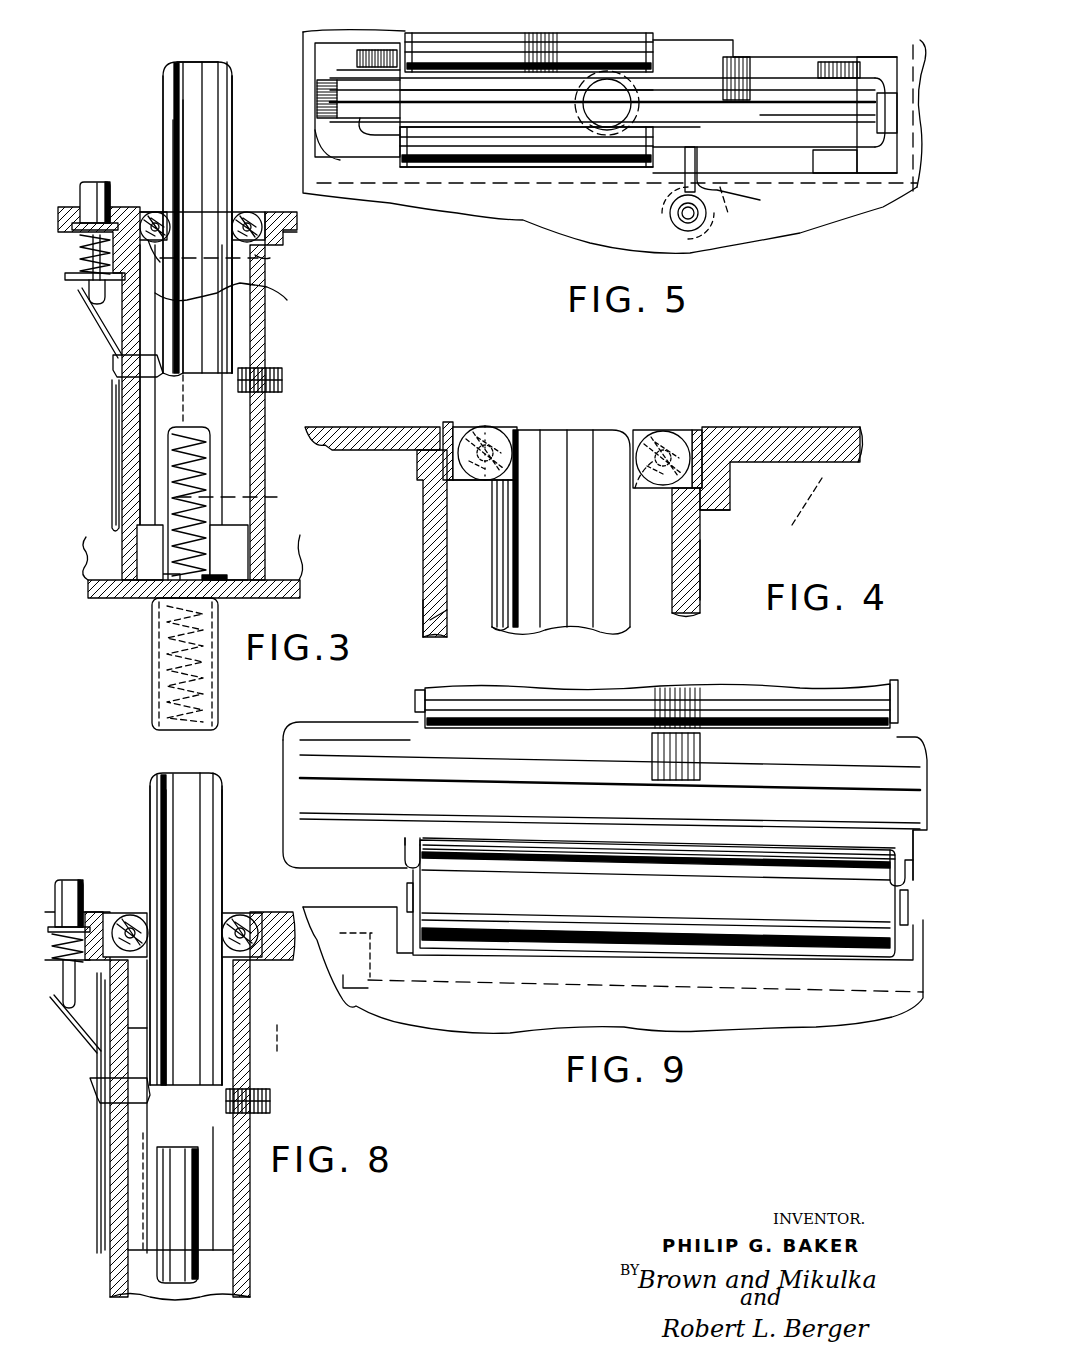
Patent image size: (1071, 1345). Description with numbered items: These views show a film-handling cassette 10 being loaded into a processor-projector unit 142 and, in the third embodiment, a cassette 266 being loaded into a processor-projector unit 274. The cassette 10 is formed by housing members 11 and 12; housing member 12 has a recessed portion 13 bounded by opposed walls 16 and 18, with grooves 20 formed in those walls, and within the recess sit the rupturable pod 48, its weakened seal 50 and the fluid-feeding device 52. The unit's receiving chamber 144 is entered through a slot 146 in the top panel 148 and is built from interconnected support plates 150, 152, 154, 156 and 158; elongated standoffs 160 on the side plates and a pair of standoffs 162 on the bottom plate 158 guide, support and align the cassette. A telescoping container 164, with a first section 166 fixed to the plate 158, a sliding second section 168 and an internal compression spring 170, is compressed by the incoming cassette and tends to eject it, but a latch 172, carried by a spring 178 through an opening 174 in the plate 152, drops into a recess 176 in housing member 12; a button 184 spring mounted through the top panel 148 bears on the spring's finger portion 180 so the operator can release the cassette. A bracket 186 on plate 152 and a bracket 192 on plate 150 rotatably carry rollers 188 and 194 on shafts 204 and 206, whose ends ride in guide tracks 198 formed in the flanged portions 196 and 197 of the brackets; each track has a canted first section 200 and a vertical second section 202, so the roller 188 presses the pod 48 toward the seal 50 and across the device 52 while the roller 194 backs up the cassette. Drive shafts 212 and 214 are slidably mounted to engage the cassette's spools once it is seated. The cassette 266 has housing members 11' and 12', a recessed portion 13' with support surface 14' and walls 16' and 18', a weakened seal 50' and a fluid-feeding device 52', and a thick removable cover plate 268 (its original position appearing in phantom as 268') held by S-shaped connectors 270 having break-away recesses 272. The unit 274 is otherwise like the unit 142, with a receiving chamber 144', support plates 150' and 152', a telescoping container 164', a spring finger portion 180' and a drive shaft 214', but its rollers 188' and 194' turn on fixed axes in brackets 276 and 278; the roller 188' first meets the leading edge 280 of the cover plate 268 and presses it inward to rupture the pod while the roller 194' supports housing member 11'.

In FIG. 3, the film-handling cassette 10 is at (230, 56).
In FIG. 5, the film-handling cassette 10 is at (847, 163).
In FIG. 4, the film-handling cassette 10 is at (617, 418).
In FIG. 3, the housing member 11 is at (252, 224).
In FIG. 3, the housing member 12 is at (165, 202).
In FIG. 5, the recessed portion 13 is at (377, 126).
In FIG. 5, the opposed wall 16 is at (676, 137).
In FIG. 5, the opposed wall 18 is at (328, 120).
In FIG. 3, the elongated parallel grooves 20 is at (166, 112).
In FIG. 4, the elongated parallel grooves 20 is at (512, 592).
In FIG. 3, the rupturable pod 48 is at (280, 298).
In FIG. 4, the rupturable pod 48 is at (500, 632).
In FIG. 3, the weakened seal 50 is at (150, 246).
In FIG. 4, the weakened seal 50 is at (453, 553).
In FIG. 3, the fluid-feeding device 52 is at (153, 218).
In FIG. 5, the fluid-feeding device 52 is at (525, 165).
In FIG. 4, the fluid-feeding device 52 is at (450, 528).
In FIG. 3, the processor-projector unit 142 is at (74, 193).
In FIG. 4, the processor-projector unit 142 is at (801, 418).
In FIG. 3, the receiving chamber 144 is at (241, 396).
In FIG. 3, the slot 146 is at (265, 217).
In FIG. 3, the top panel 148 is at (290, 228).
In FIG. 4, the top panel 148 is at (815, 445).
In FIG. 3, the support plate 150 is at (290, 412).
In FIG. 5, the support plate 150 is at (594, 142).
In FIG. 4, the support plate 150 is at (726, 570).
In FIG. 3, the support plate 152 is at (96, 299).
In FIG. 5, the support plate 152 is at (742, 210).
In FIG. 4, the support plate 152 is at (402, 611).
In FIG. 5, the support plate 154 is at (306, 50).
In FIG. 5, the support plate 156 is at (915, 196).
In FIG. 3, the support plate 158 is at (294, 580).
In FIG. 3, the elongated standoffs 160 is at (142, 428).
In FIG. 5, the elongated standoffs 160 is at (315, 36).
In FIG. 4, the elongated standoffs 160 is at (470, 607).
In FIG. 3, the standoffs 162 is at (233, 540).
In FIG. 5, the standoffs 162 is at (795, 120).
In FIG. 8, the standoffs 162 is at (220, 1266).
In FIG. 3, the telescoping container 164 is at (155, 664).
In FIG. 5, the telescoping container 164 is at (633, 103).
In FIG. 3, the first section 166 is at (162, 676).
In FIG. 3, the second section 168 is at (210, 467).
In FIG. 3, the compression spring 170 is at (278, 497).
In FIG. 3, the latch 172 is at (128, 365).
In FIG. 5, the latch 172 is at (750, 198).
In FIG. 8, the latch 172 is at (118, 1092).
In FIG. 3, the opening 174 is at (117, 385).
In FIG. 5, the recess 176 is at (696, 148).
In FIG. 3, the spring 178 is at (112, 462).
In FIG. 3, the finger portion 180 is at (82, 299).
In FIG. 5, the finger portion 180 is at (672, 215).
In FIG. 3, the button 184 is at (95, 182).
In FIG. 5, the button 184 is at (670, 210).
In FIG. 3, the bracket 186 is at (145, 215).
In FIG. 5, the bracket 186 is at (478, 167).
In FIG. 4, the bracket 186 is at (420, 480).
In FIG. 3, the roller 188 is at (150, 208).
In FIG. 5, the roller 188 is at (526, 166).
In FIG. 4, the roller 188 is at (507, 432).
In FIG. 3, the bracket 192 is at (255, 214).
In FIG. 5, the bracket 192 is at (440, 80).
In FIG. 4, the bracket 192 is at (690, 555).
In FIG. 3, the roller 194 is at (250, 193).
In FIG. 5, the roller 194 is at (555, 54).
In FIG. 4, the roller 194 is at (660, 428).
In FIG. 5, the opposed flanged portions 196 is at (380, 178).
In FIG. 4, the opposed flanged portions 196 is at (430, 528).
In FIG. 5, the opposed flanged portions 197 is at (340, 80).
In FIG. 4, the opposed flanged portions 197 is at (718, 510).
In FIG. 4, the guide track 198 is at (440, 440).
In FIG. 4, the first section 200 is at (465, 425).
In FIG. 4, the second section 202 is at (488, 472).
In FIG. 3, the shaft 204 is at (263, 270).
In FIG. 5, the shaft 204 is at (655, 167).
In FIG. 4, the shaft 204 is at (498, 425).
In FIG. 3, the shaft 206 is at (270, 258).
In FIG. 5, the shaft 206 is at (357, 62).
In FIG. 4, the shaft 206 is at (675, 435).
In FIG. 5, the drive shaft 212 is at (752, 68).
In FIG. 3, the drive shaft 214 is at (287, 369).
In FIG. 5, the drive shaft 214 is at (506, 59).
In FIG. 9, the cassette 266 is at (292, 712).
In FIG. 8, the cassette 266 is at (230, 776).
In FIG. 9, the removable cover plate 268 is at (659, 822).
In FIG. 8, the removable cover plate 268 is at (116, 1106).
In FIG. 9, the S-shaped connectors 270 is at (410, 870).
In FIG. 9, the recess 272 is at (405, 850).
In FIG. 9, the processor-projector unit 274 is at (504, 1044).
In FIG. 8, the processor-projector unit 274 is at (55, 895).
In FIG. 9, the bracket 276 is at (545, 955).
In FIG. 8, the bracket 276 is at (108, 915).
In FIG. 9, the bracket 278 is at (900, 690).
In FIG. 8, the bracket 278 is at (250, 915).
In FIG. 8, the leading edge 280 is at (159, 1179).
In FIG. 9, the housing member 11' is at (355, 710).
In FIG. 8, the housing member 11' is at (242, 934).
In FIG. 8, the housing member 12' is at (186, 913).
In FIG. 9, the recessed portion 13' is at (405, 818).
In FIG. 9, the support surface 14' is at (449, 815).
In FIG. 9, the opposed wall 16' is at (889, 839).
In FIG. 8, the opposed wall 18' is at (119, 1031).
In FIG. 8, the weakened seal 50' is at (138, 937).
In FIG. 9, the fluid-feeding device 52' is at (659, 828).
In FIG. 8, the fluid-feeding device 52' is at (134, 930).
In FIG. 8, the receiving chamber 144' is at (273, 1182).
In FIG. 8, the sleeve 150' is at (299, 1038).
In FIG. 9, the pin 152' is at (626, 962).
In FIG. 8, the pin 152' is at (87, 1113).
In FIG. 8, the pin 164' is at (225, 1215).
In FIG. 8, the spring 180' is at (73, 1040).
In FIG. 9, the roller 188' is at (657, 910).
In FIG. 8, the roller 188' is at (125, 916).
In FIG. 9, the roller 194' is at (652, 691).
In FIG. 8, the roller 194' is at (241, 911).
In FIG. 9, the gear 214' is at (714, 712).
In FIG. 8, the gear 214' is at (275, 1083).
In FIG. 9, the plate 268' is at (659, 838).